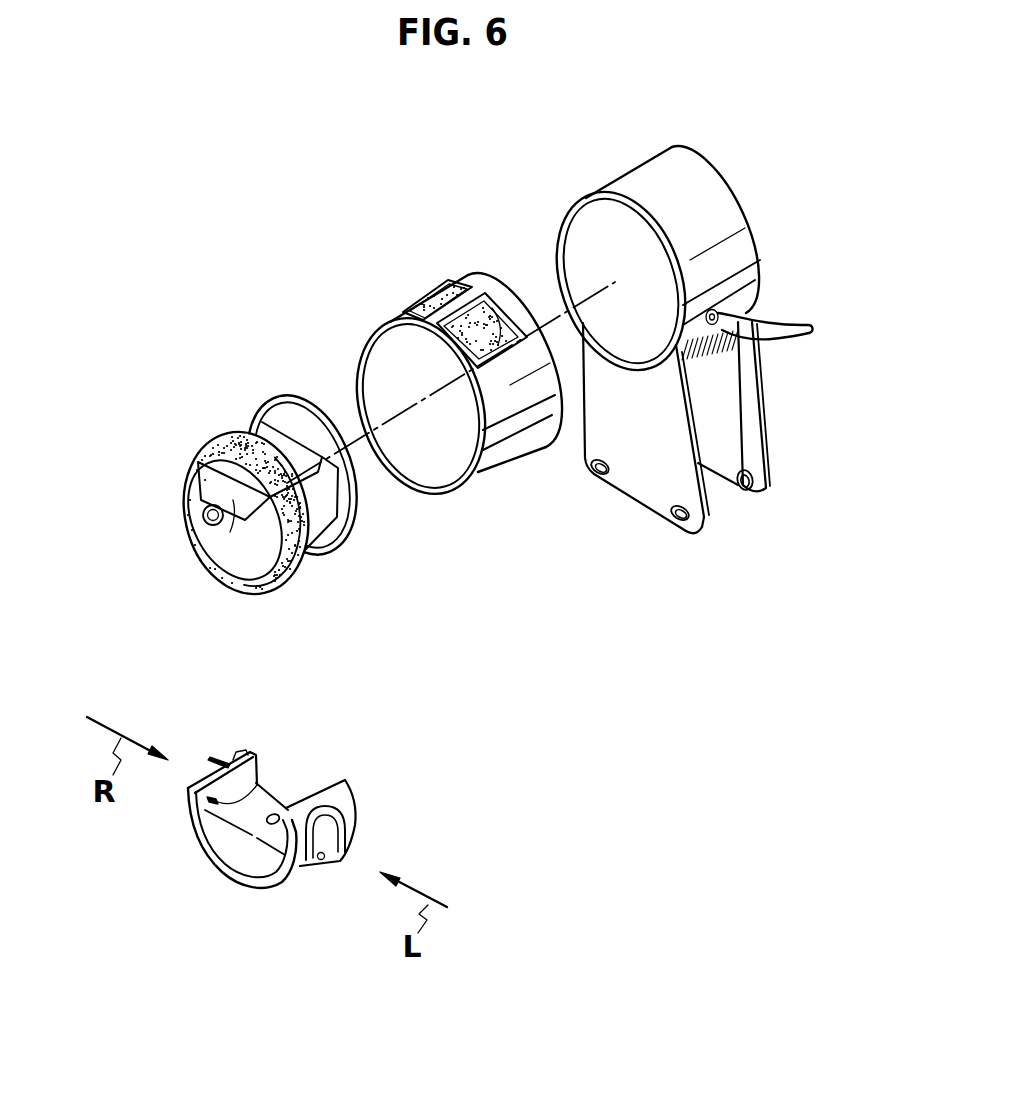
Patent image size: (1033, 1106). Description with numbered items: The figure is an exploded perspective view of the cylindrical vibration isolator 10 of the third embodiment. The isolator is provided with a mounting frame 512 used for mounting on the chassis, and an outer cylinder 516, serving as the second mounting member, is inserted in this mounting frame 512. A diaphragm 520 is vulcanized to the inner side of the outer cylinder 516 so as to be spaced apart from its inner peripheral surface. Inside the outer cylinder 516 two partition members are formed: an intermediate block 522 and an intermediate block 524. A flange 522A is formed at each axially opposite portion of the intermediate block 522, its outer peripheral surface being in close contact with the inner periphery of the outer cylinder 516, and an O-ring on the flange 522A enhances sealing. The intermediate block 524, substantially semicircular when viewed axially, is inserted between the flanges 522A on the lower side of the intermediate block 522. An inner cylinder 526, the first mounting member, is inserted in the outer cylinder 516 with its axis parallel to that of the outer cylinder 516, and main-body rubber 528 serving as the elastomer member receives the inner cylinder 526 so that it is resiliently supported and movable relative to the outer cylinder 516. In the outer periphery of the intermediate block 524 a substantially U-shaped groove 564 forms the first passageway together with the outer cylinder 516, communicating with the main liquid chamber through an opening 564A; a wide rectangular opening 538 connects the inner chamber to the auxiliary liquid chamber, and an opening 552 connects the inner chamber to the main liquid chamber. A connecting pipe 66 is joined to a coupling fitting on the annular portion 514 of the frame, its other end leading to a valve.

The vibration isolator 10 is at (217, 310).
The connecting pipe 66 is at (787, 322).
The mounting frame 512 is at (769, 424).
The annular portion 514 is at (731, 214).
The outer cylinder 516 is at (520, 433).
The diaphragm 520 is at (497, 345).
The intermediate block 522 is at (181, 484).
The flange 522A is at (213, 437).
The intermediate block 524 is at (203, 848).
The inner cylinder 526 is at (228, 570).
The main-body rubber 528 is at (305, 515).
The rectangular opening 538 is at (232, 762).
The opening 552 is at (276, 814).
The groove 564 is at (350, 826).
The opening 564A is at (258, 785).